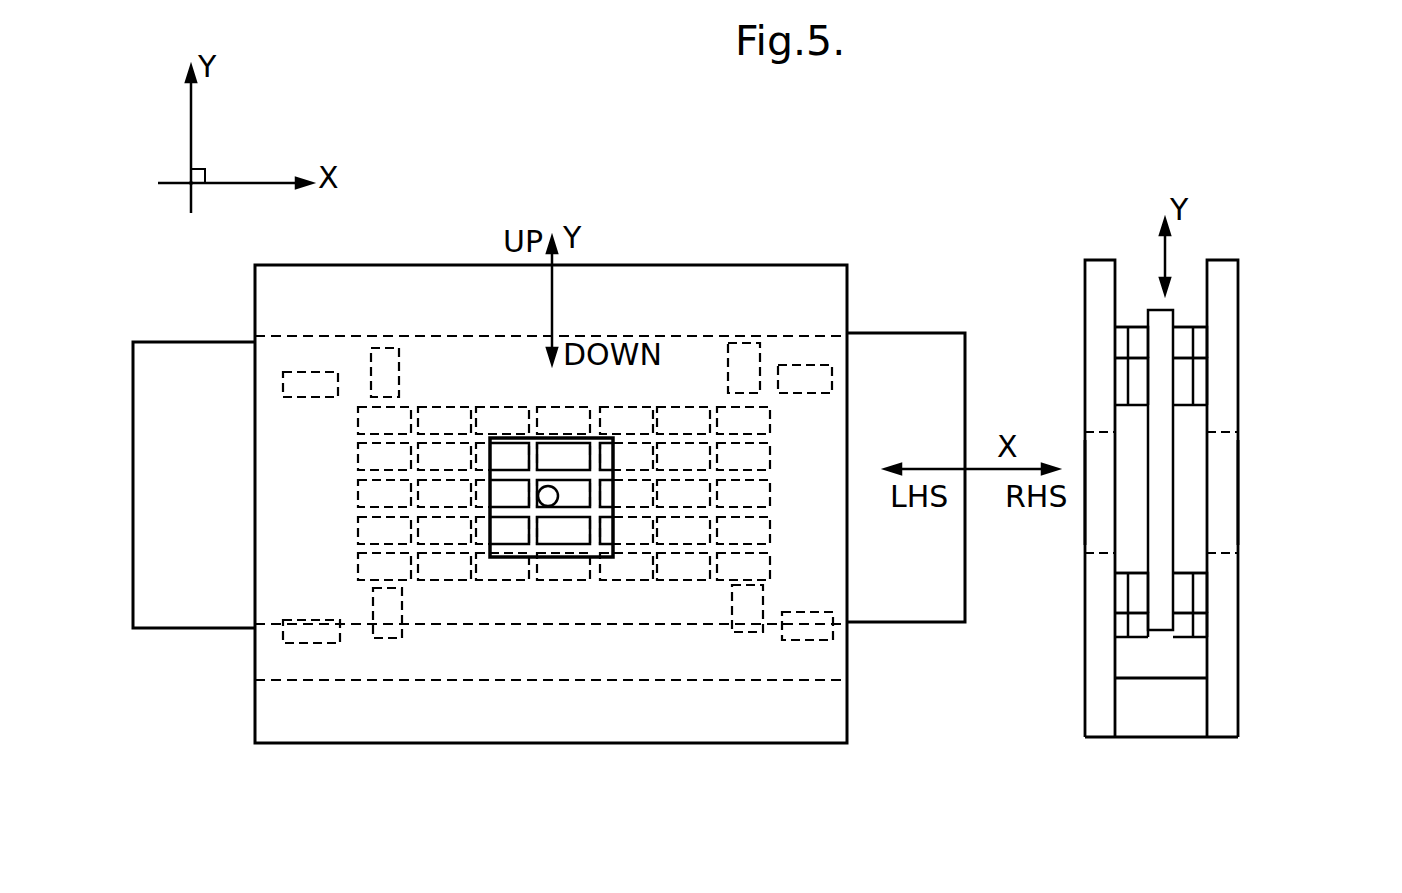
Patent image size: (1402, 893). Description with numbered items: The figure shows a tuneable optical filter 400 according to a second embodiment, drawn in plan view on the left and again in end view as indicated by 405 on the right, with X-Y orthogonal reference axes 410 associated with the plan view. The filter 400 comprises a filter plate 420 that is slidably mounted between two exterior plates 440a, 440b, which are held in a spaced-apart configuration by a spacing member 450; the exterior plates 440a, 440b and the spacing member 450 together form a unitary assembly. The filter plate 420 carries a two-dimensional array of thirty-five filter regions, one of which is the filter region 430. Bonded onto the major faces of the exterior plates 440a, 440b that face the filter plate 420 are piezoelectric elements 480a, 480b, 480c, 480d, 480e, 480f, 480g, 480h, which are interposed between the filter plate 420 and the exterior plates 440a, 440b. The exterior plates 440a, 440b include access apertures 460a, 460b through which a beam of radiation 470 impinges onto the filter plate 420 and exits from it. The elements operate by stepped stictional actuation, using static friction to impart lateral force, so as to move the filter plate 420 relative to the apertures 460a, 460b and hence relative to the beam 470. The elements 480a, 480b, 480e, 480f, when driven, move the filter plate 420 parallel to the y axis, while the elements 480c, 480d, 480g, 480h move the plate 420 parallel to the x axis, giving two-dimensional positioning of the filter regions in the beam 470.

The tuneable optical filter 400 is at (802, 183).
The end view of tuneable filter 405 is at (1247, 183).
The X-Y orthogonal reference axes 410 is at (313, 105).
The filter plate 420 is at (162, 553).
The filter region 430 is at (377, 460).
The exterior plate 440a is at (1093, 282).
The exterior plate 440b is at (1225, 287).
The spacing member 450 is at (337, 720).
The access aperture 460a is at (1098, 495).
The access aperture 460b is at (1227, 492).
The beam of radiation 470 is at (557, 503).
The piezoelectric element 480a is at (382, 367).
The piezoelectric element 480b is at (747, 363).
The piezoelectric element 480c is at (822, 375).
The piezoelectric element 480d is at (818, 630).
The piezoelectric element 480e is at (743, 602).
The piezoelectric element 480f is at (393, 603).
The piezoelectric element 480g is at (282, 633).
The piezoelectric element 480h is at (300, 383).